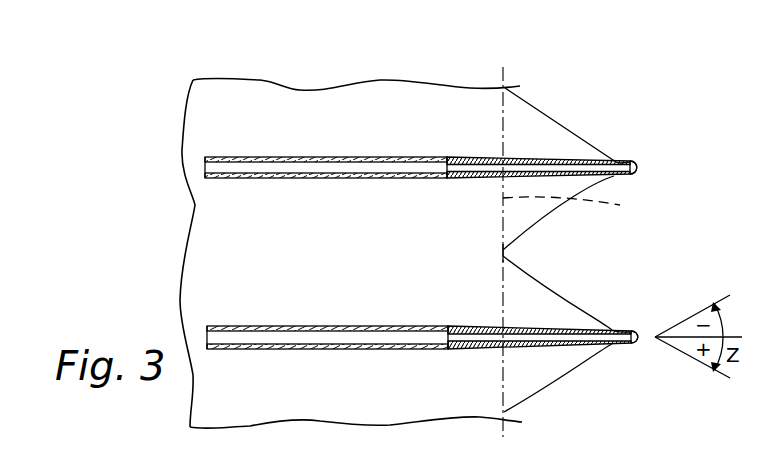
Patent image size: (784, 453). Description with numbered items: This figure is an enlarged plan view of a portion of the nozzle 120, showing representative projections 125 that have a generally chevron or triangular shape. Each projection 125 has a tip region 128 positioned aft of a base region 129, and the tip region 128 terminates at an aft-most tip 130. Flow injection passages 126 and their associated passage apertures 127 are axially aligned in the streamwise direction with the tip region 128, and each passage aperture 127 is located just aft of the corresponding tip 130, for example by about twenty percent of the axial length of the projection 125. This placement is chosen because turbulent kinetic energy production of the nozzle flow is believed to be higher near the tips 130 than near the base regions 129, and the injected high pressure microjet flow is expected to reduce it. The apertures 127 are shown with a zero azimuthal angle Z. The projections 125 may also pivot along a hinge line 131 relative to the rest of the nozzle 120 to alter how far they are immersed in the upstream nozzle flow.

The nozzle 120 is at (226, 225).
The projection 125 is at (595, 146).
The flow injection passage 126 is at (516, 172).
The passage aperture 127 is at (634, 165).
The tip region 128 is at (606, 345).
The base region 129 is at (505, 252).
The aft-most tip 130 is at (614, 330).
The hinge line 131 is at (618, 203).